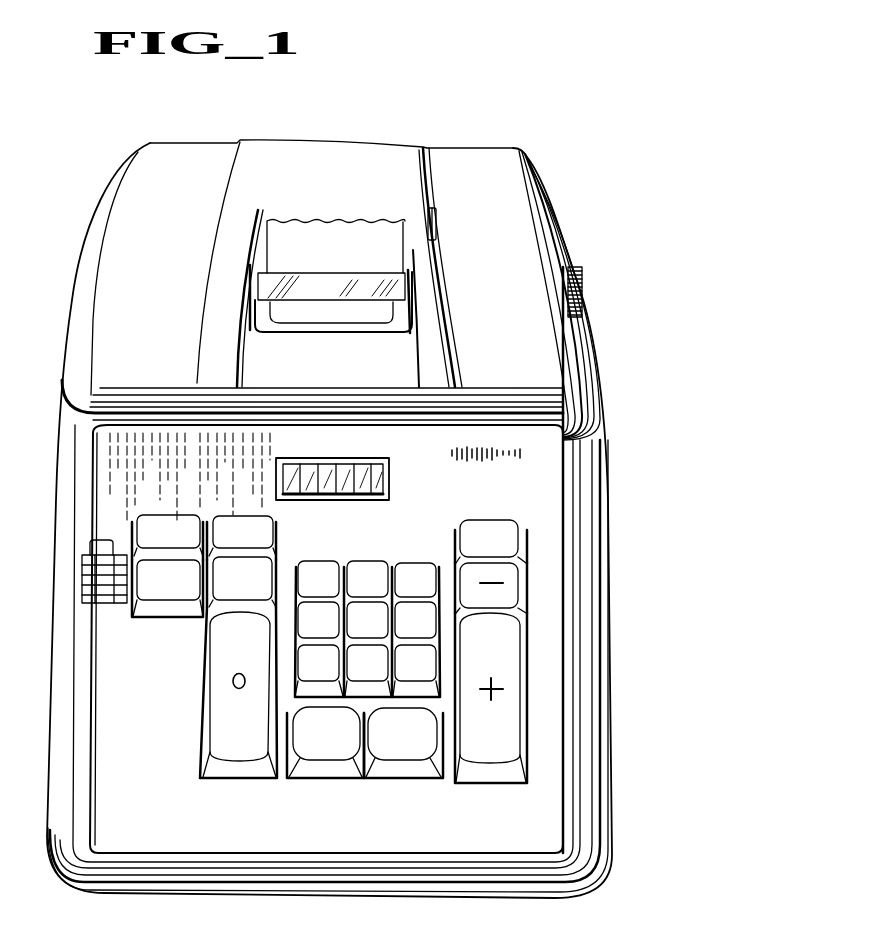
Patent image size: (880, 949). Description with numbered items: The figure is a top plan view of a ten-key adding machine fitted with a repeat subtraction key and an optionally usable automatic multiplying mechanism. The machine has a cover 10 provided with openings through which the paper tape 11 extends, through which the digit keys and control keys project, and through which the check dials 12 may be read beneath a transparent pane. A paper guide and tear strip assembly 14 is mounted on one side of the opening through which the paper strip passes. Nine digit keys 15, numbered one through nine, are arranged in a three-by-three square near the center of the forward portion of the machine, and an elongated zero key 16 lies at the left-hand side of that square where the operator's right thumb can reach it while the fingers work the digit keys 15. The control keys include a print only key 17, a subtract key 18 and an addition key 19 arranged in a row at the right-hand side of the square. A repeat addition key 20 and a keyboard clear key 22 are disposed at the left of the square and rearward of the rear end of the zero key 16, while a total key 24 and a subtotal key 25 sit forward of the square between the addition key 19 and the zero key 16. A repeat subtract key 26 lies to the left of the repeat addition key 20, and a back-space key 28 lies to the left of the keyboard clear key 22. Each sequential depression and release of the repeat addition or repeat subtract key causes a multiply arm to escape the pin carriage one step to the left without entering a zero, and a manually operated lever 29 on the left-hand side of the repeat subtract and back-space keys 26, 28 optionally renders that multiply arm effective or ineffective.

The cover 10 is at (70, 318).
The paper tape 11 is at (311, 223).
The check dials 12 is at (281, 499).
The paper guide and tear strip assembly 14 is at (296, 324).
The digit keys 15 is at (354, 563).
The "0" key 16 is at (211, 738).
The print only key 17 is at (496, 526).
The subtract key 18 is at (514, 594).
The addition key 19 is at (517, 663).
The repeat addition key 20 is at (222, 516).
The keyboard clear key 22 is at (272, 570).
The total key 24 is at (397, 773).
The subtotal key 25 is at (308, 713).
The repeat subtract key 26 is at (195, 517).
The back-space key 28 is at (174, 608).
The manually operated lever 29 is at (83, 602).